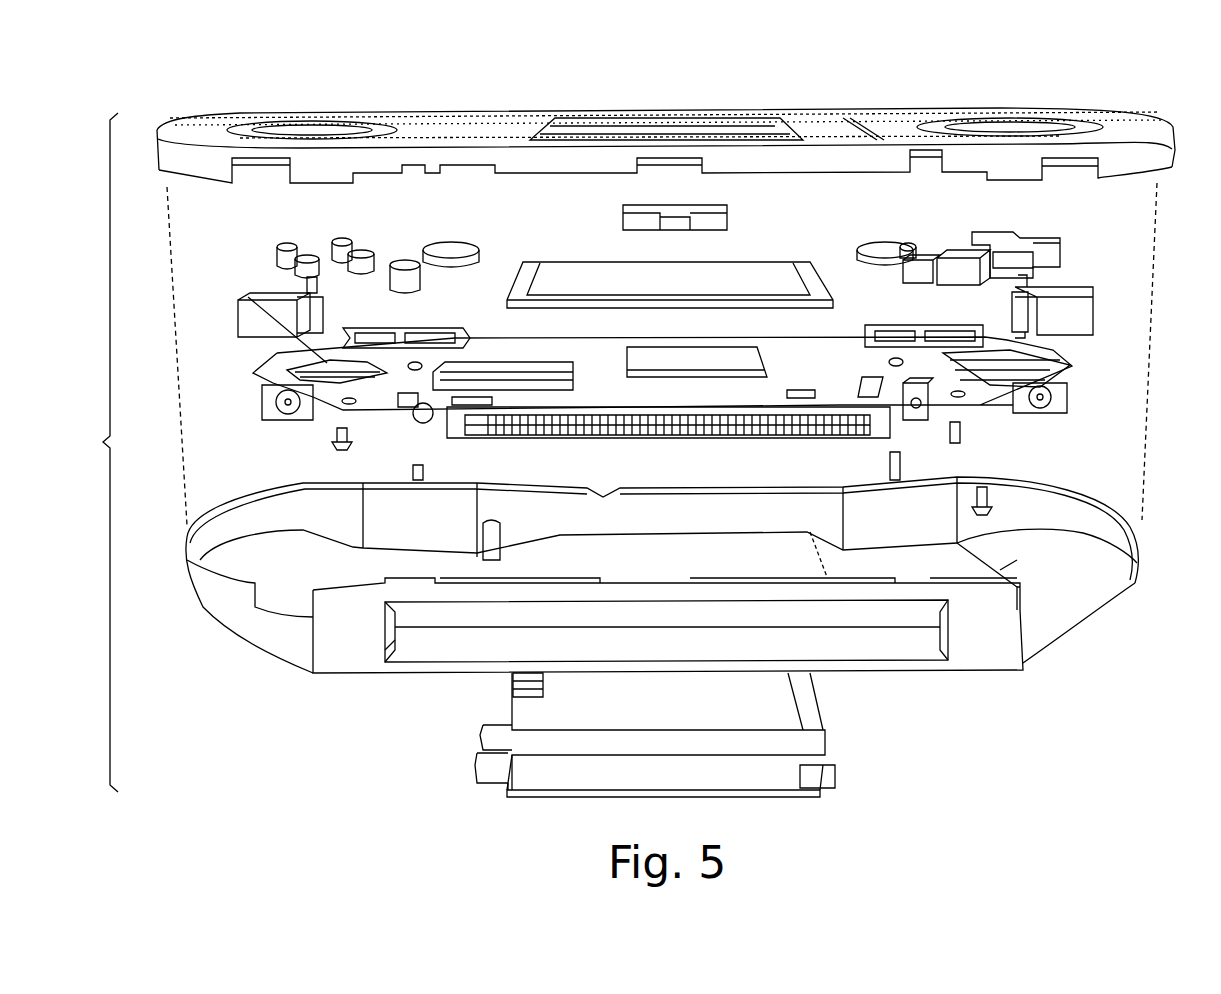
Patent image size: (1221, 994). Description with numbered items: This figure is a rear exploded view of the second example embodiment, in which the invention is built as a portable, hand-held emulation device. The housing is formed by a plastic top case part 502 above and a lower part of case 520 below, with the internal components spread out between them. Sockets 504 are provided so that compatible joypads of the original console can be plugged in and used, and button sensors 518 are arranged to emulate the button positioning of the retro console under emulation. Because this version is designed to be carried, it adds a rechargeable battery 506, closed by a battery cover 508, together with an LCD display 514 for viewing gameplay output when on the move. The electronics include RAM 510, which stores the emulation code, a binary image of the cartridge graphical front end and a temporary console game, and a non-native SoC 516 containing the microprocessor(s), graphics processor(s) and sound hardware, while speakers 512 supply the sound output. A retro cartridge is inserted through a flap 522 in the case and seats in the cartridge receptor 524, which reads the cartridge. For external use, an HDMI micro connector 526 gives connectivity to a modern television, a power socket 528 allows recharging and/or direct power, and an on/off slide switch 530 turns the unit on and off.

The plastic top case part 502 is at (184, 128).
The sockets 504 is at (378, 330).
The rechargeable battery 506 is at (563, 710).
The battery cover 508 is at (745, 775).
The RAM 510 is at (505, 365).
The speakers 512 is at (890, 245).
The LCD display 514 is at (730, 270).
The non-native SoC 516 is at (640, 360).
The button sensors 518 is at (248, 297).
The lower part of case 520 is at (1050, 632).
The flap 522 is at (870, 640).
The cartridge receptor 524 is at (625, 432).
The HDMI micro connector 526 is at (450, 412).
The power socket 528 is at (912, 420).
The on/off slide switch 530 is at (625, 215).